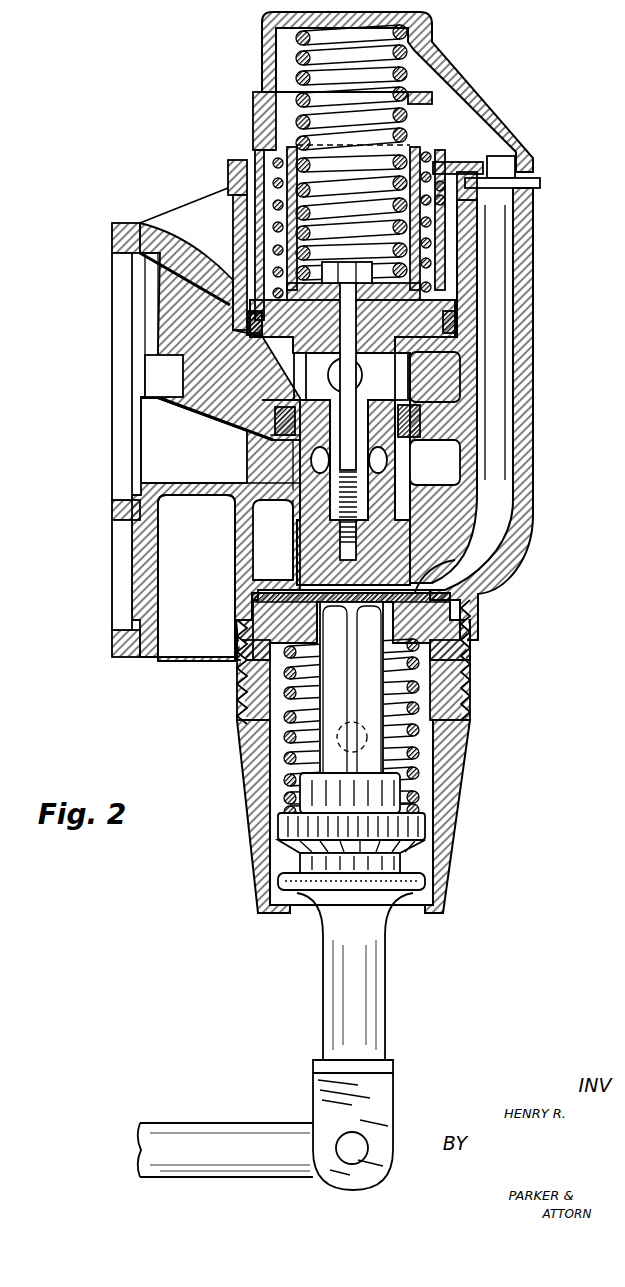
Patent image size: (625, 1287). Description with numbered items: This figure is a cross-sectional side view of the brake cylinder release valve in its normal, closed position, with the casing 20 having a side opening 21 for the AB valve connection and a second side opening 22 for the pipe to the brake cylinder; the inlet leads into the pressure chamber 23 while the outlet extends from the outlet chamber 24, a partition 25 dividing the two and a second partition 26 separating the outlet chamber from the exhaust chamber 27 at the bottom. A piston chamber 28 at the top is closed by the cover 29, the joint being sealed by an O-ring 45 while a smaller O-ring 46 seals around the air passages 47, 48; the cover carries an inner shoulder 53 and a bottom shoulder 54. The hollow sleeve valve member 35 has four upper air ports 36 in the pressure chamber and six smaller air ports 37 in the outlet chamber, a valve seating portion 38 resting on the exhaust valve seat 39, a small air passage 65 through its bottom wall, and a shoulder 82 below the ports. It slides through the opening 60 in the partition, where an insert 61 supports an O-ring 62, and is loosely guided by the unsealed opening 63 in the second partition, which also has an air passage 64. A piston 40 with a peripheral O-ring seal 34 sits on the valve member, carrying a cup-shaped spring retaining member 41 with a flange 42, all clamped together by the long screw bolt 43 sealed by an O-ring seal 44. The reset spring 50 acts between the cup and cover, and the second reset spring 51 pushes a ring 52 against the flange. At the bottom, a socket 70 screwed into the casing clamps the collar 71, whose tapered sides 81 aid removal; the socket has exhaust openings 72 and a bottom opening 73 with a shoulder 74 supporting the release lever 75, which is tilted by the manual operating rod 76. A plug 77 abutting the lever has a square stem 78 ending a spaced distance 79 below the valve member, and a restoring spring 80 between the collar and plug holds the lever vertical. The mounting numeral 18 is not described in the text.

The mounting bracket 18 is at (112, 512).
The casing 20 is at (120, 228).
The side opening 21 is at (122, 312).
The second side opening 22 is at (122, 448).
The pressure chamber 23 is at (150, 345).
The outlet chamber 24 is at (175, 455).
The partition 25 is at (225, 398).
The second partition 26 is at (405, 475).
The exhaust chamber 27 is at (265, 551).
The piston chamber 28 is at (270, 120).
The cover 29 is at (278, 30).
The O-ring seal 34 is at (248, 325).
The sleeve type valve member 35 is at (428, 520).
The air ports 36 is at (395, 375).
The smaller air ports 37 is at (385, 457).
The valve seating portion 38 is at (410, 566).
The exhaust valve seat 39 is at (425, 585).
The piston 40 is at (440, 300).
The cup-shaped spring retaining member 41 is at (390, 192).
The flange 42 is at (418, 150).
The screw bolt 43 is at (352, 268).
The O-ring seal 44 is at (322, 272).
The O-ring 45 is at (233, 185).
The smaller O-ring 46 is at (540, 184).
The air passage 47 is at (522, 168).
The air passage 48 is at (495, 235).
The reset spring 50 is at (300, 62).
The second reset spring 51 is at (455, 223).
The ring 52 is at (445, 165).
The shoulder 53 is at (262, 103).
The bottom shoulder 54 is at (240, 215).
The opening 60 is at (292, 405).
The insert 61 is at (280, 418).
The O-ring 62 is at (283, 432).
The opening 63 is at (292, 450).
The air passage 64 is at (272, 478).
The small air passage 65 is at (296, 503).
The socket 70 is at (450, 786).
The collar 71 is at (455, 606).
The exhaust openings 72 is at (248, 740).
The bottom opening 73 is at (290, 912).
The shoulder 74 is at (440, 905).
The release lever 75 is at (365, 1006).
The manual operating rod 76 is at (232, 1128).
The plug 77 is at (410, 831).
The square stem 78 is at (375, 672).
The spaced distance 79 is at (361, 610).
The restoring spring 80 is at (285, 690).
The tapered sides 81 is at (250, 600).
The shoulder 82 is at (418, 398).